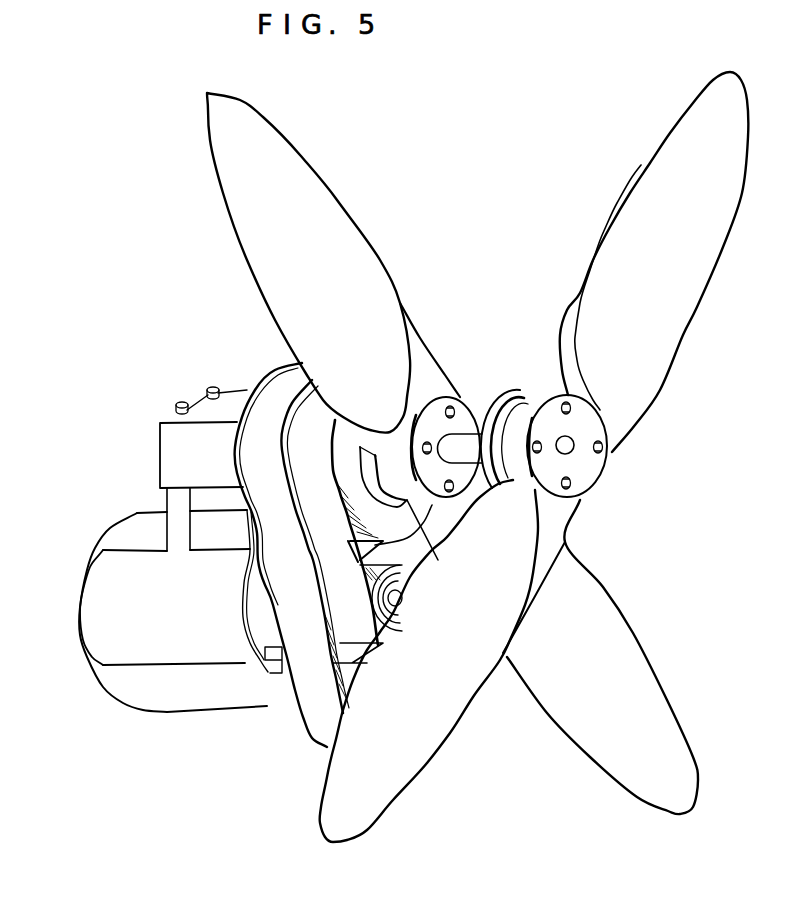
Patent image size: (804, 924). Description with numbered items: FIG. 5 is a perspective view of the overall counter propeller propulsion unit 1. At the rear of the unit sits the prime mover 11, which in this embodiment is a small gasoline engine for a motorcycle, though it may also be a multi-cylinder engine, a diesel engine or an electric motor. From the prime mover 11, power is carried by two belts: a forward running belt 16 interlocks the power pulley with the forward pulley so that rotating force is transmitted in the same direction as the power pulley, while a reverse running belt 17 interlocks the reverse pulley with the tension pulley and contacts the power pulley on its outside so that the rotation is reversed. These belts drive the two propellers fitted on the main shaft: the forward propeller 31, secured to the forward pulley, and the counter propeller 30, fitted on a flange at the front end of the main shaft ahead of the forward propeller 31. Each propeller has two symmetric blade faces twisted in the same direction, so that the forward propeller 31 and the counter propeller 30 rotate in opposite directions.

The counter-rotating fan assembly 1 is at (460, 108).
The prime mover 11 is at (188, 630).
The forward running belt 16 is at (345, 605).
The reverse running belt 17 is at (290, 597).
The counter propeller 30 is at (663, 197).
The forward propeller 31 is at (292, 200).